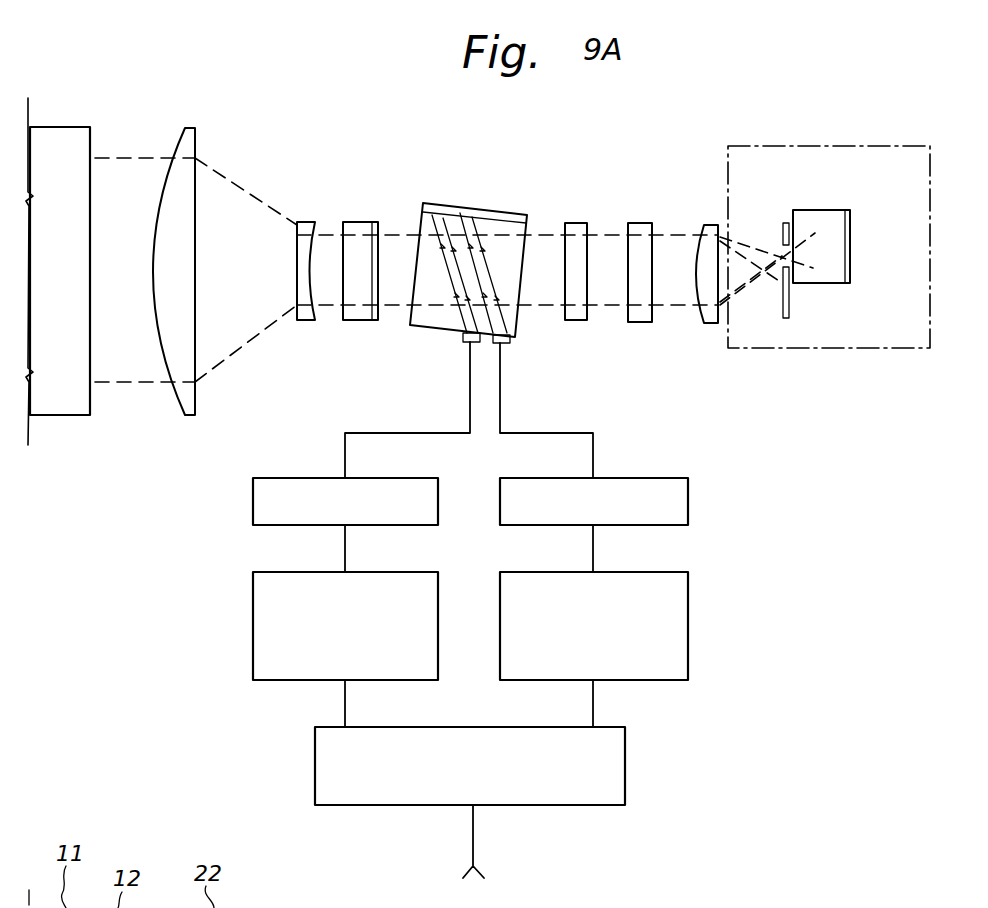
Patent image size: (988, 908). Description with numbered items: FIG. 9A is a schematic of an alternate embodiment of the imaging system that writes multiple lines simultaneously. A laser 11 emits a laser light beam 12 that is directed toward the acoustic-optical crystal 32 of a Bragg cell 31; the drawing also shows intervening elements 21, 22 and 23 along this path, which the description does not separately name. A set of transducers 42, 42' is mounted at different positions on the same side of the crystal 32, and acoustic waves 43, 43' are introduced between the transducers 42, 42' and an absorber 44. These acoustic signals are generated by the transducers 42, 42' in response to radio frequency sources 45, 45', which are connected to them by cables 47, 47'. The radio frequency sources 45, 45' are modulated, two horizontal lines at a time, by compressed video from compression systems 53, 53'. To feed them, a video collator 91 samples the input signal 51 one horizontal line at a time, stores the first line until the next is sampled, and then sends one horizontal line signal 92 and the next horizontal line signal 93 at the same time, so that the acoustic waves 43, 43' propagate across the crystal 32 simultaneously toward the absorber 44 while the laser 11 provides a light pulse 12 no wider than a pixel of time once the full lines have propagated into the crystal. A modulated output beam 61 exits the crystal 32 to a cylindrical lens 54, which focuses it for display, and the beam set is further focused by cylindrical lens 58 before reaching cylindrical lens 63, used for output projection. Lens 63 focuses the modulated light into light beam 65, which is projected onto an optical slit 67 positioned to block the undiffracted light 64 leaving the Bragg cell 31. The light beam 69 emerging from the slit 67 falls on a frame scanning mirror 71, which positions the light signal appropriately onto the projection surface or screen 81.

The laser 11 is at (55, 126).
The laser light beam 12 is at (110, 156).
The light beam section 21 is at (238, 288).
The condensing lens 22 is at (196, 137).
The lens 23 is at (304, 221).
The Bragg cell 31 is at (420, 295).
The acoustic-optical crystal 32 is at (507, 227).
The transducer 42 is at (450, 362).
The transducer 42' is at (528, 363).
The acoustic wave 43 is at (436, 236).
The acoustic wave 43' is at (474, 243).
The absorber 44 is at (495, 209).
The radio frequency source 45 is at (308, 501).
The radio frequency source 45' is at (631, 501).
The cable 47 is at (407, 410).
The cable 47' is at (546, 410).
The input signal 51 is at (473, 838).
The compression system 53 is at (304, 626).
The compression system 53' is at (632, 626).
The cylindrical lens 54 is at (575, 223).
The cylindrical lens 58 is at (640, 223).
The modulated output beam 61 is at (537, 310).
The cylindrical lens 63 is at (706, 225).
The undiffracted light 64 is at (748, 296).
The light beam 65 is at (752, 246).
The optical slit 67 is at (785, 222).
The light beam 69 is at (812, 268).
The frame scanning mirror 71 is at (851, 240).
The projection surface 81 is at (878, 146).
The video collator 91 is at (625, 763).
The horizontal line signal 92 is at (345, 703).
The horizontal line signal 93 is at (593, 703).